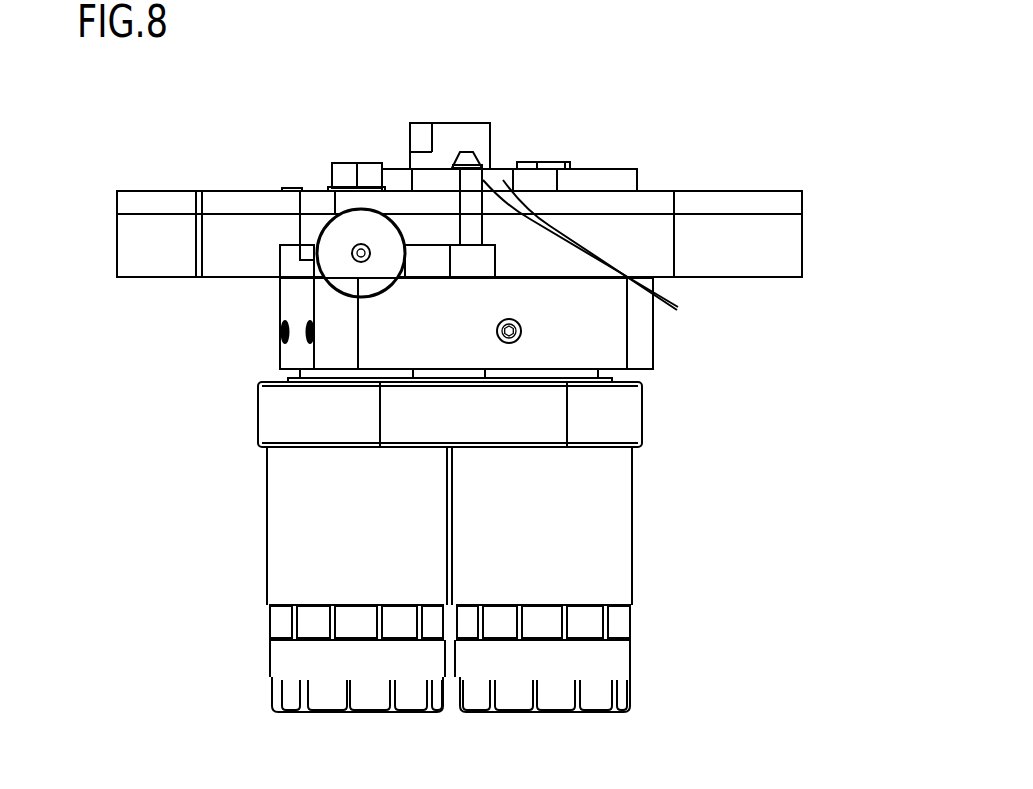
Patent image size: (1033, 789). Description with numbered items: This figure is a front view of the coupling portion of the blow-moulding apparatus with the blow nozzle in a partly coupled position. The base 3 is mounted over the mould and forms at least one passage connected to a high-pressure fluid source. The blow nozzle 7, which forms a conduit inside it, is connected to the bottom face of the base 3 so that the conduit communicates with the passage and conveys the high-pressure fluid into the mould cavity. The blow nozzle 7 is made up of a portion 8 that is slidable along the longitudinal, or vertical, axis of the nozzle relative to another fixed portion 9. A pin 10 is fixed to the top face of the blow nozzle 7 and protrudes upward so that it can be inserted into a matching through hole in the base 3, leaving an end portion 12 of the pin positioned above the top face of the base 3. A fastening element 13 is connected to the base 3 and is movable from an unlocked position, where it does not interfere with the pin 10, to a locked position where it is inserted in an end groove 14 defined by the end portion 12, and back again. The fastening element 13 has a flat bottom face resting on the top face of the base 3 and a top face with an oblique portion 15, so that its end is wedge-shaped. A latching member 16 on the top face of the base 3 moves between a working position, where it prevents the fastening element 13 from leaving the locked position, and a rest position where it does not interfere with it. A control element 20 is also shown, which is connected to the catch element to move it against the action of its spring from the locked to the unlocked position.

The base 3 is at (785, 240).
The blow nozzle 7 is at (310, 532).
The slidable portion 8 is at (608, 570).
The fixed portion 9 is at (593, 345).
The pin 10 is at (473, 150).
The end portion 12 is at (483, 180).
The fastening element 13 is at (408, 180).
The end groove 14 is at (448, 183).
The oblique portion 15 is at (595, 250).
The latching member 16 is at (598, 180).
The control element 20 is at (352, 238).